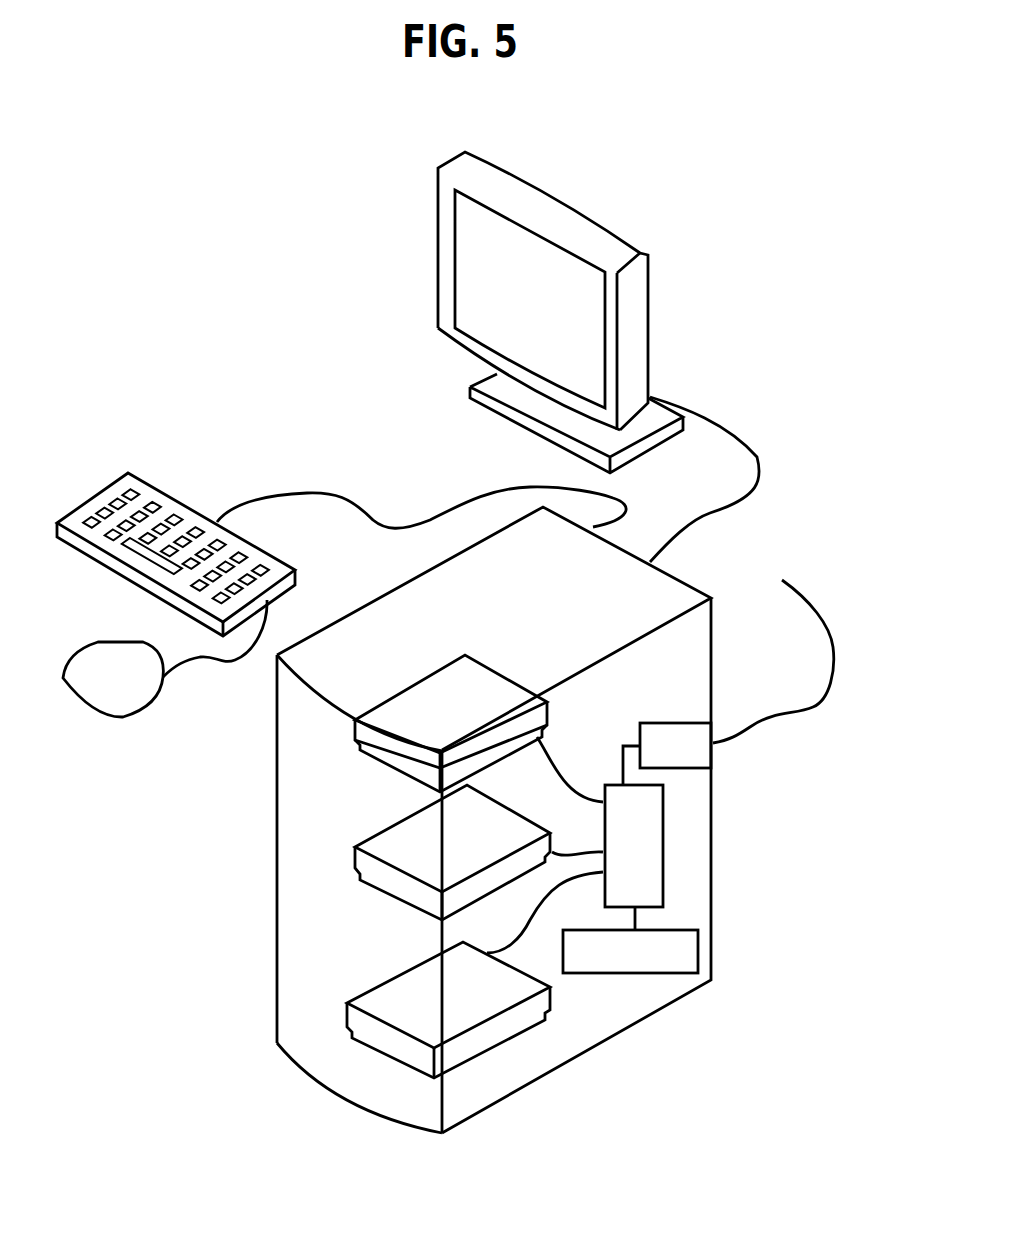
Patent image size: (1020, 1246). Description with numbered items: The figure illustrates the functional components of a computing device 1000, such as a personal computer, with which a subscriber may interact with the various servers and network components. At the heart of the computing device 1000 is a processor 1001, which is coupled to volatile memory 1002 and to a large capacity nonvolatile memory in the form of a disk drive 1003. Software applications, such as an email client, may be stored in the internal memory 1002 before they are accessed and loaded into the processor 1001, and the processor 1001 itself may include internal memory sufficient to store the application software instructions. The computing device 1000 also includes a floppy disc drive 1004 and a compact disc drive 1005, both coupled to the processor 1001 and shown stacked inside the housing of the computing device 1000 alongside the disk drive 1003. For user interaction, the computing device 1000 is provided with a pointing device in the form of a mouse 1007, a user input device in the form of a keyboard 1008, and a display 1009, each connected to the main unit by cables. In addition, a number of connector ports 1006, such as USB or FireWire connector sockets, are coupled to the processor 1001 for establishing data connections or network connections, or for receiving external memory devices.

The computing device 1000 is at (713, 620).
The processor 1001 is at (657, 857).
The volatile memory 1002 is at (608, 964).
The disk drive 1003 is at (550, 1007).
The floppy disc drive 1004 is at (550, 722).
The compact disc (CD) drive 1005 is at (502, 890).
The connector ports 1006 is at (653, 757).
The mouse 1007 is at (110, 718).
The keyboard 1008 is at (295, 568).
The display 1009 is at (648, 329).